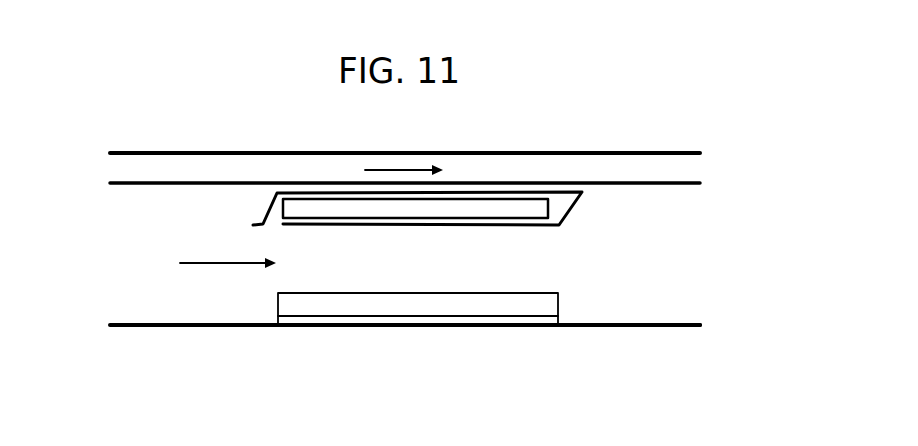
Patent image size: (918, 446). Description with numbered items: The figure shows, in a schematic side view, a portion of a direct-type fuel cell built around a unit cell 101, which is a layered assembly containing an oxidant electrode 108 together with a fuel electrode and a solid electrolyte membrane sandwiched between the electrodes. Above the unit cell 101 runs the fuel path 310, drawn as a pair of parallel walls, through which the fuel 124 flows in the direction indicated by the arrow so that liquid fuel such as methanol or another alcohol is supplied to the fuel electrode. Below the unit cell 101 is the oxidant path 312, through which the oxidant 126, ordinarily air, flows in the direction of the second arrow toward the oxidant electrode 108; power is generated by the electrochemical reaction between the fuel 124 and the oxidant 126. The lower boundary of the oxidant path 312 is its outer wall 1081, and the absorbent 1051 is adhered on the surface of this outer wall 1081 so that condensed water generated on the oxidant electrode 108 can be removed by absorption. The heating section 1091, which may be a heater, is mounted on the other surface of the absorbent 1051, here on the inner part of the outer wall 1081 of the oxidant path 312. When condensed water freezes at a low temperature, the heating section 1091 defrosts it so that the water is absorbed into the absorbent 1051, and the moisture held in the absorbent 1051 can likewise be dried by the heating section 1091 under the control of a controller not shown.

The fuel path 310 is at (680, 170).
The oxidant path 312 is at (157, 324).
The fuel 124 is at (424, 171).
The oxidant 126 is at (249, 263).
The unit cell 101 is at (546, 232).
The oxidant electrode 108 is at (350, 224).
The absorbent 1051 is at (547, 309).
The heating section 1091 is at (500, 322).
The outer wall 1081 is at (663, 327).